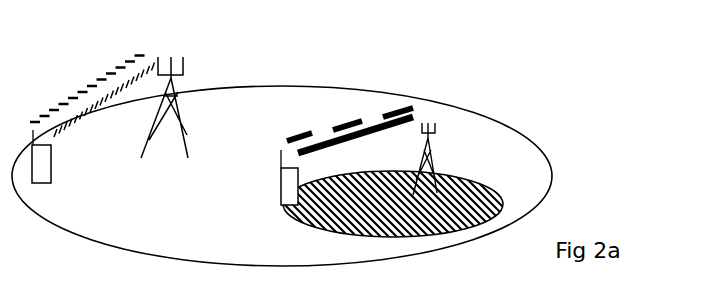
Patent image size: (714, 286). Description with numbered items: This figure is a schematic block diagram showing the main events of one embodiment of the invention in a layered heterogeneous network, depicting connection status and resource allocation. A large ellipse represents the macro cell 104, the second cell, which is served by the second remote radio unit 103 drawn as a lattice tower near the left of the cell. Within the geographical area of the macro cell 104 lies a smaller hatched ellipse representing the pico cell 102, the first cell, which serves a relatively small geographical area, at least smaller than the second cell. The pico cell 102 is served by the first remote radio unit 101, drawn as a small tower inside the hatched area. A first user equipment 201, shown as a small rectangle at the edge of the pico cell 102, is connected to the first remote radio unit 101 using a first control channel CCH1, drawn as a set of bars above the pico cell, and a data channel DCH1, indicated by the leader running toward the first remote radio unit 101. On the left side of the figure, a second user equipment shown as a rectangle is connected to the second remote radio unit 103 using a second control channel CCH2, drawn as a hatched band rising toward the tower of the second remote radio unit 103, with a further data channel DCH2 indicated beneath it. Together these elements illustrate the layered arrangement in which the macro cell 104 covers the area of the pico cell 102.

The first remote radio unit 101 is at (435, 130).
The pico cell 102 is at (500, 192).
The second remote radio unit 103 is at (171, 142).
The macro cell 104 is at (313, 87).
The first user equipment 201 is at (283, 208).
The first control channel CCH1 is at (350, 120).
The second control channel CCH2 is at (99, 75).
The data channel DCH1 is at (368, 140).
The dedicated channel 2 DCH2 is at (93, 110).